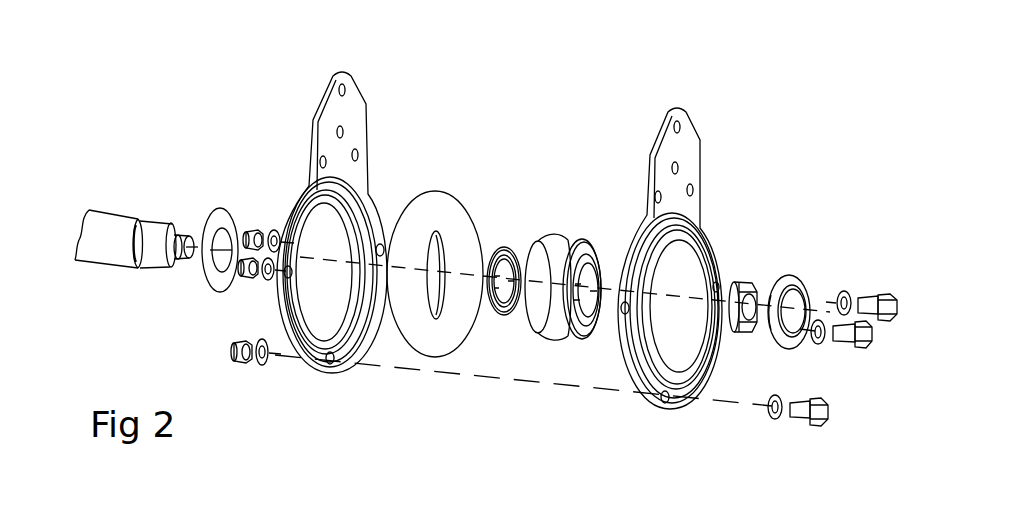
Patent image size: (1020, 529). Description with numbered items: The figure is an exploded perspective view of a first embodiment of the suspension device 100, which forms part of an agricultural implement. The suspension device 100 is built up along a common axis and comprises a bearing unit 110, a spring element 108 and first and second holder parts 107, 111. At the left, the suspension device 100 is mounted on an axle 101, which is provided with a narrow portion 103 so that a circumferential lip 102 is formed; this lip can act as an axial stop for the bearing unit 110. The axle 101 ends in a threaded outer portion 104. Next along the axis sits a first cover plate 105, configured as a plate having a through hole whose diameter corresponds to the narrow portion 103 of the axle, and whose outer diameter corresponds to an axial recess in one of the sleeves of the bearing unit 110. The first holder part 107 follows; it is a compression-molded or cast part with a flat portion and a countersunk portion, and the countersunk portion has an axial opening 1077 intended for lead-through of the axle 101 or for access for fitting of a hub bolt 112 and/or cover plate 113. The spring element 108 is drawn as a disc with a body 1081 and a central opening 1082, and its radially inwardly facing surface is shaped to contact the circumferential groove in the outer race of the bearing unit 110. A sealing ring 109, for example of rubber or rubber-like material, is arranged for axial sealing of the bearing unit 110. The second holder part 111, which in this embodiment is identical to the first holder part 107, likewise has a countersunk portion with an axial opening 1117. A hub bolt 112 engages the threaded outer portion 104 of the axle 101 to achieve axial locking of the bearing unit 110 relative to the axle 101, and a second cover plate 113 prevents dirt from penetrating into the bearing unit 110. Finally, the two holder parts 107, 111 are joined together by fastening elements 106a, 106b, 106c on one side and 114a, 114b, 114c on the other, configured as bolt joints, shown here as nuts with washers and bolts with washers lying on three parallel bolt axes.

The suspension device 100 is at (153, 110).
The axle 101 is at (85, 231).
The circumferential lip 102 is at (135, 267).
The narrow portion 103 is at (150, 228).
The threaded outer portion 104 is at (182, 263).
The first cover plate 105 is at (212, 222).
The fastening element 106a is at (247, 358).
The fastening element 106b is at (245, 273).
The fastening element 106c is at (252, 228).
The first holder part 107 is at (326, 244).
The axial opening 1077 is at (317, 292).
The spring element 108 is at (435, 261).
The disc body 1081 is at (448, 220).
The central opening 1082 is at (435, 313).
The sealing ring 109 is at (497, 315).
The bearing unit 110 is at (552, 212).
The second holder part 111 is at (663, 275).
The axial opening 1117 is at (677, 327).
The hub bolt 112 is at (736, 278).
The second cover plate 113 is at (782, 279).
The fastening element 114a is at (802, 410).
The fastening element 114b is at (843, 338).
The fastening element 114c is at (870, 302).